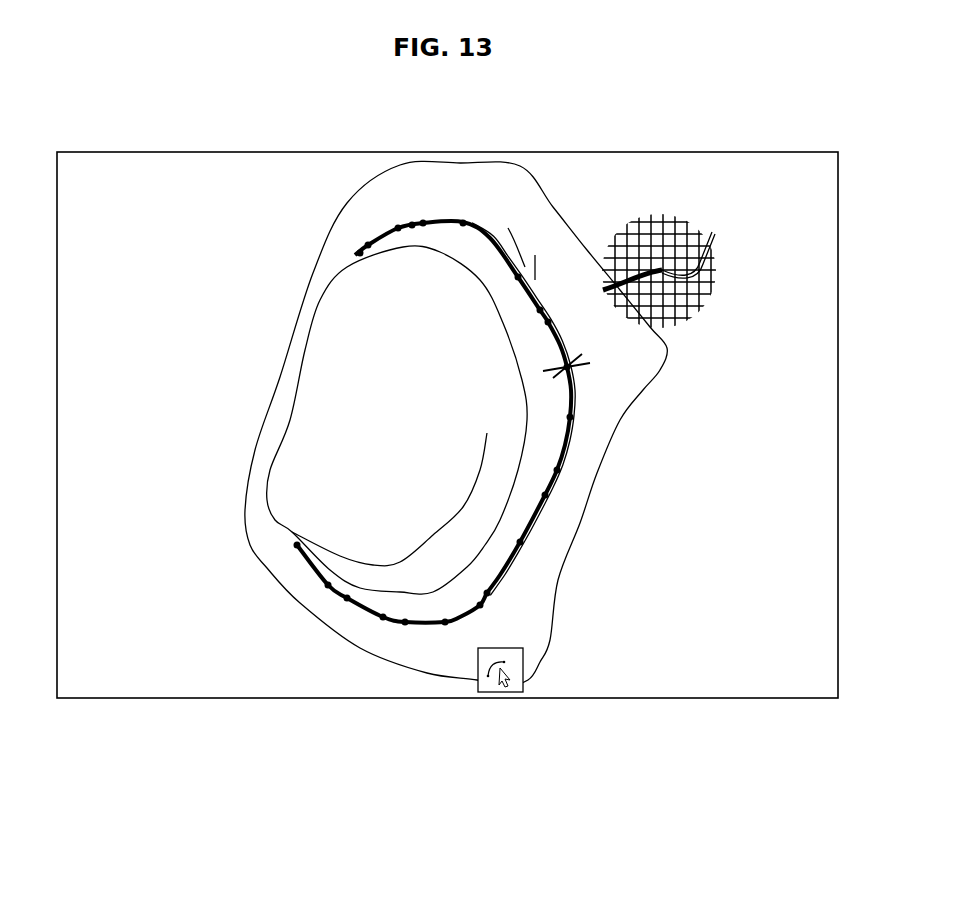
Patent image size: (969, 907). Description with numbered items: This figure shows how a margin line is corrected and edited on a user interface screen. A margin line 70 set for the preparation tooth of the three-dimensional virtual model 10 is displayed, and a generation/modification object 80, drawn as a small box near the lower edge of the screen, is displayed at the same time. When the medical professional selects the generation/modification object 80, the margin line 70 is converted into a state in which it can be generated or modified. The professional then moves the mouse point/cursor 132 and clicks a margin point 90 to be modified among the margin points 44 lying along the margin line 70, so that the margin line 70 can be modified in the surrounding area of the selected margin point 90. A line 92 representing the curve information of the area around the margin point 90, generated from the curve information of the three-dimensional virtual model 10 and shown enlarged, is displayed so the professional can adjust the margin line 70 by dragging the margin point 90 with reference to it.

The three-dimensional virtual model 10 is at (244, 404).
The margin points 44 is at (547, 496).
The margin line 70 is at (530, 262).
The generation/modification object 80 is at (509, 702).
The margin point 90 is at (573, 372).
The line 92 is at (720, 266).
The mouse point/cursor 132 is at (572, 375).